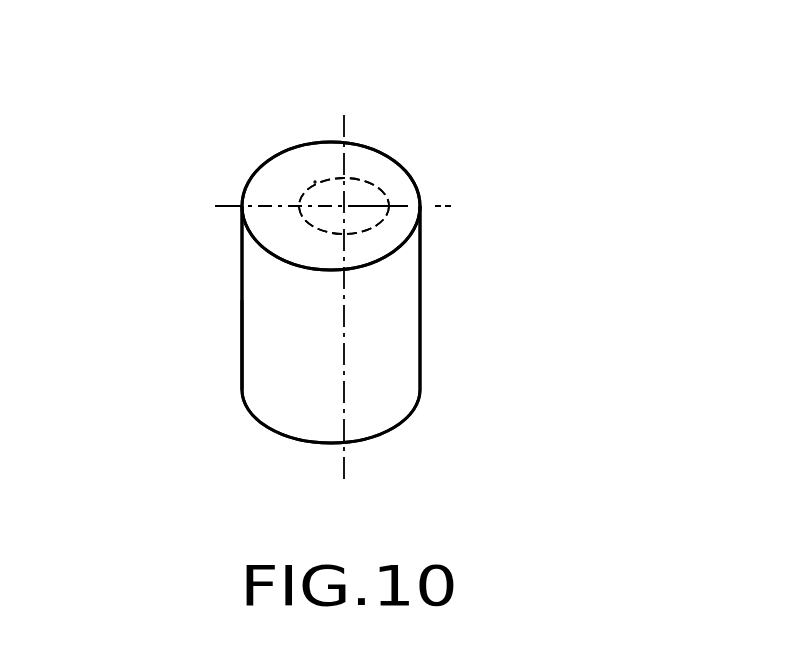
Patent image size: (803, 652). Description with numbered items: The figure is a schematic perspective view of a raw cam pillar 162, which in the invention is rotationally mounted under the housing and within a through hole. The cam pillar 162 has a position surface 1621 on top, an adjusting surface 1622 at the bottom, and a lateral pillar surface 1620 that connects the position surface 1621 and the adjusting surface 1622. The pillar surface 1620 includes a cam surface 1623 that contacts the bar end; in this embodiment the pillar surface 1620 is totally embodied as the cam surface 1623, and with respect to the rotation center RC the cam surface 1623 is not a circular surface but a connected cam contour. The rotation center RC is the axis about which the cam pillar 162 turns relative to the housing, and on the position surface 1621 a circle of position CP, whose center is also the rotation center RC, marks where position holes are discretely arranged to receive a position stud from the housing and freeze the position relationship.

The cam pillar 162 is at (489, 317).
The pillar surface 1620 is at (273, 300).
The position surface 1621 is at (262, 187).
The adjusting surface 1622 is at (377, 430).
The cam surface 1623 is at (270, 365).
The circle of position CP is at (314, 178).
The rotation center RC is at (346, 203).